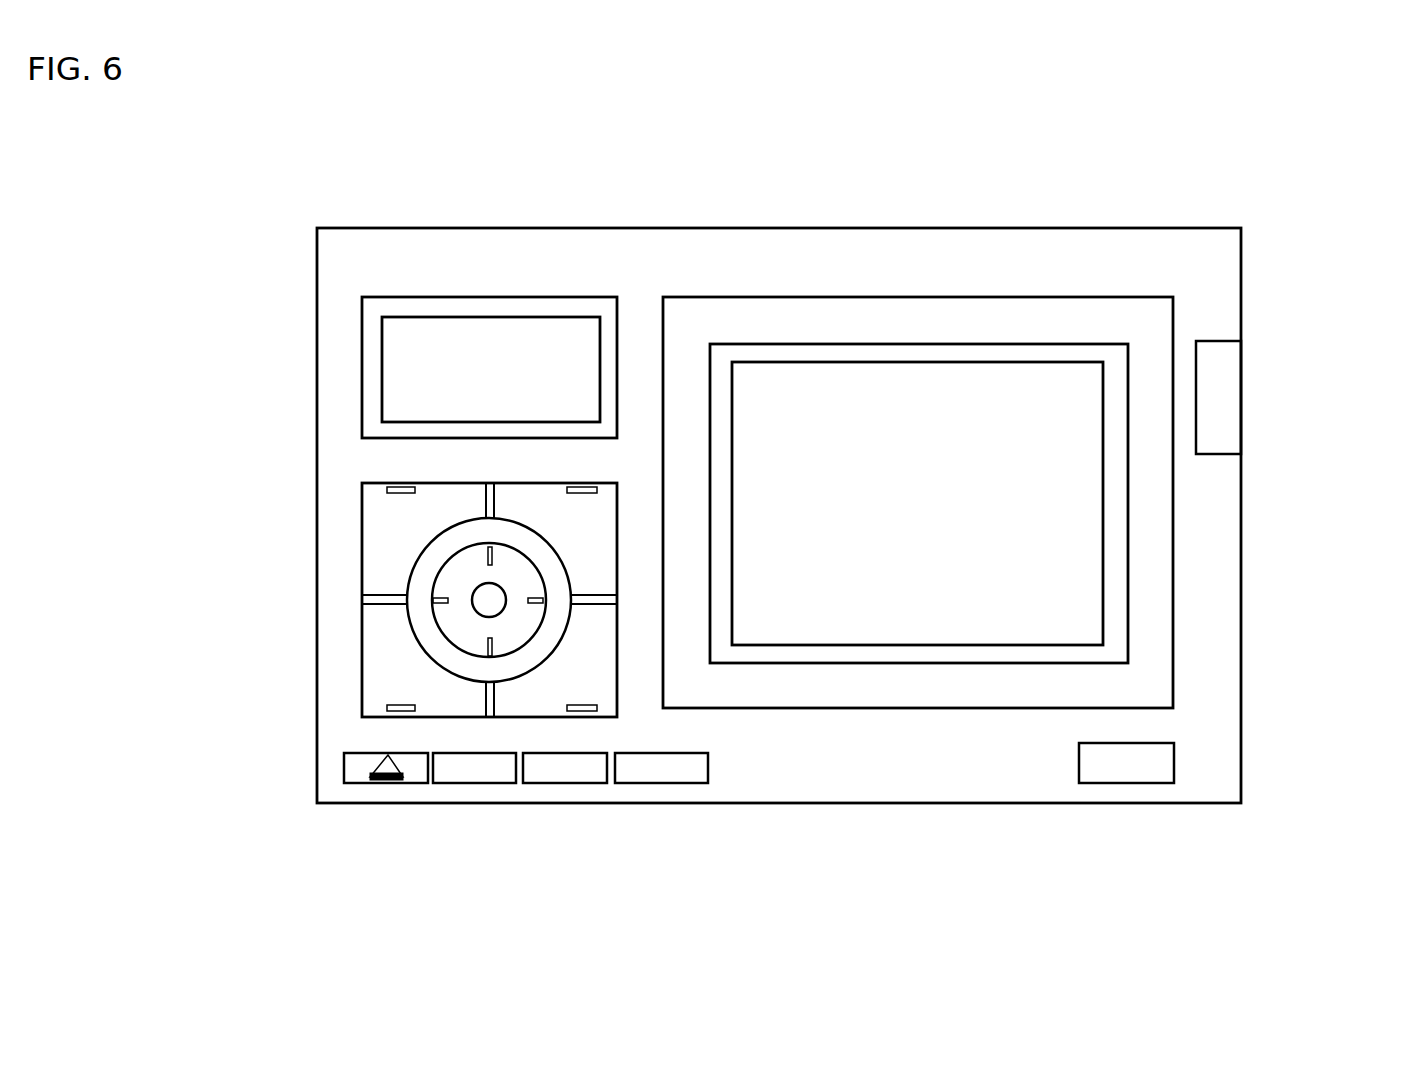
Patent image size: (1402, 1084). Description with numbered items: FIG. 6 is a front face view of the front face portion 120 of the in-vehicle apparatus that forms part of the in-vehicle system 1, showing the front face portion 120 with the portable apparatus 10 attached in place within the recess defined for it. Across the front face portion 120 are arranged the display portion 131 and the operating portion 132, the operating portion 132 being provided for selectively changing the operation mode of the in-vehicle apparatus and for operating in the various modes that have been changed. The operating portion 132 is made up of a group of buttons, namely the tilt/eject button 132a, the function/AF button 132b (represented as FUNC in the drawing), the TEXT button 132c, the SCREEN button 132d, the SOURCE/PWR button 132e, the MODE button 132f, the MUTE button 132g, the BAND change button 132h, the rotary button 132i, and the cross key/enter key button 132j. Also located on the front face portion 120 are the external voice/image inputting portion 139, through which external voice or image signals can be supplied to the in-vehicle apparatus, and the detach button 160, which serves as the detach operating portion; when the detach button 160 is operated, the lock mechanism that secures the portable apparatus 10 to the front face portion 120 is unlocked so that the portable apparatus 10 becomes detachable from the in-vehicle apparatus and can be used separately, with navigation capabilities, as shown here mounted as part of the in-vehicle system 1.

The in-vehicle system 1 is at (783, 87).
The portable apparatus 10 is at (970, 310).
The front face portion 120 is at (502, 258).
The display portion 131 is at (400, 377).
The operating portion 132 is at (448, 683).
The tilt/eject button 132a is at (377, 783).
The function/AF button 132b is at (472, 783).
The TEXT button 132c is at (567, 783).
The SCREEN button 132d is at (658, 800).
The SOURCE/PWR button 132e is at (377, 553).
The MODE button 132f is at (520, 498).
The MUTE button 132g is at (600, 647).
The BAND change button 132h is at (383, 648).
The rotary button 132i is at (407, 586).
The cross key/enter key button 132j is at (450, 618).
The external voice/image inputting portion 139 is at (1128, 770).
The detach button 160 is at (1223, 388).